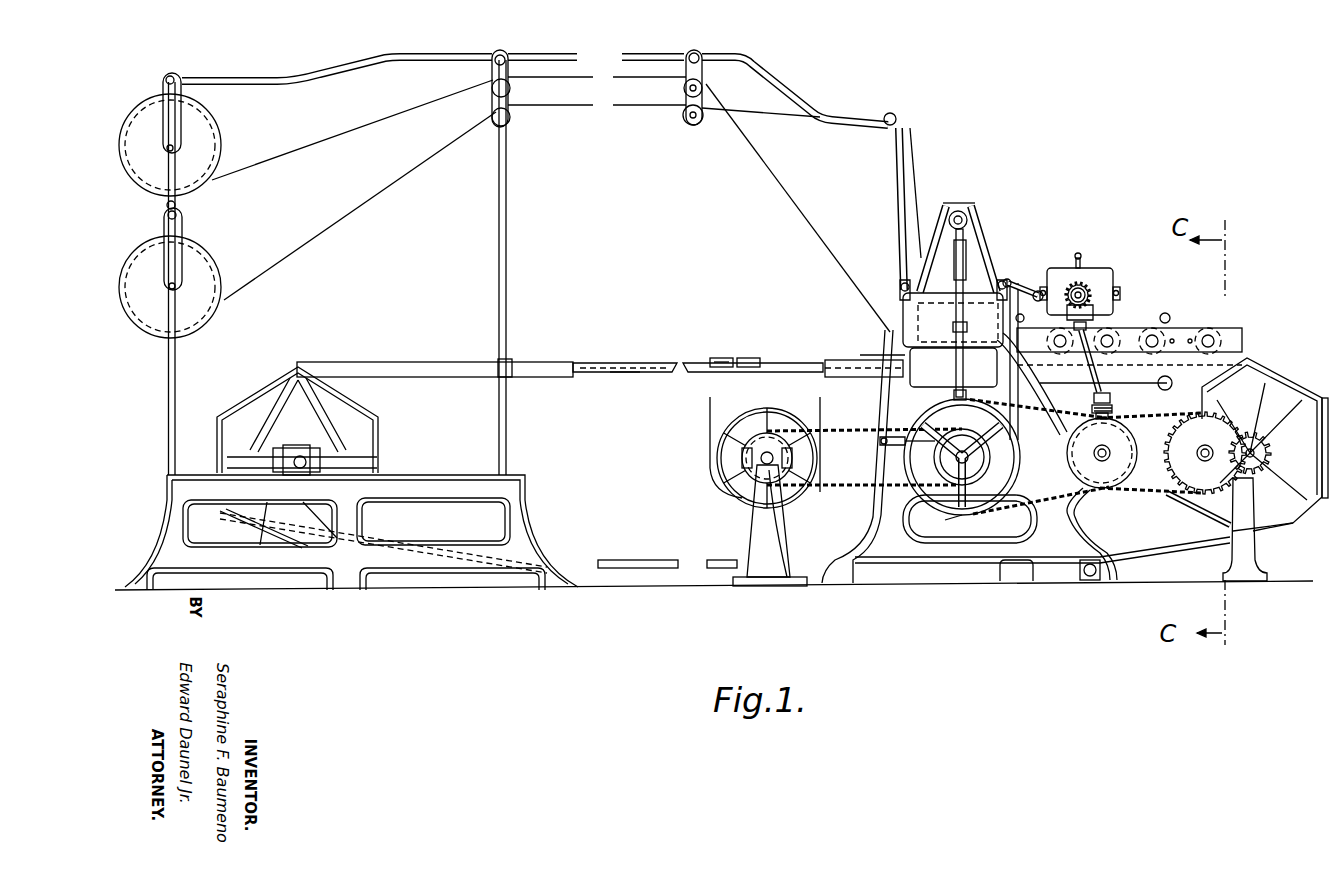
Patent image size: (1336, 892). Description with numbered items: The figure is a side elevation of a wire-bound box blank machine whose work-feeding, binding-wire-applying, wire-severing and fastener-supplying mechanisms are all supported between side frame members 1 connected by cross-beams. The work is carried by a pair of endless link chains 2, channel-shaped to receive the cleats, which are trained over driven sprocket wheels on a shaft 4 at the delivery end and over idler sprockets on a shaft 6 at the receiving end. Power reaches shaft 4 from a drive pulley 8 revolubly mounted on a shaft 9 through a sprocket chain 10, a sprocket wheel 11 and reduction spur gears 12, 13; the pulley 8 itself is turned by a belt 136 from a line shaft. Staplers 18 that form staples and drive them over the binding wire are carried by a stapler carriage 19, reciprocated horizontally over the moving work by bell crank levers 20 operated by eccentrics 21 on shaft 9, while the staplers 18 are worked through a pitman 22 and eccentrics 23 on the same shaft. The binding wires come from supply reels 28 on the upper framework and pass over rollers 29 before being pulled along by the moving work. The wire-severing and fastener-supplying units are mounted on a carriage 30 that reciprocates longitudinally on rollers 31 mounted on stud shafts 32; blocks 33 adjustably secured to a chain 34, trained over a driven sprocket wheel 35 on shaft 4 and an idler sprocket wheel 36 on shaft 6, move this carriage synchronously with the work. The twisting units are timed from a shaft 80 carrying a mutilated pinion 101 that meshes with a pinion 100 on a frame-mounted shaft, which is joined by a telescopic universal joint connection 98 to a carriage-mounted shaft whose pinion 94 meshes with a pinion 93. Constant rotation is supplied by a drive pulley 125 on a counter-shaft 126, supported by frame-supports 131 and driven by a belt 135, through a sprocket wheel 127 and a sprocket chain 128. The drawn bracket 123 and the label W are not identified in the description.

The side frame members 1 is at (528, 548).
The endless link chains 2 is at (660, 362).
The shaft 4 is at (1262, 445).
The shaft 6 is at (300, 455).
The drive pulley 8 is at (905, 520).
The shaft 9 is at (955, 459).
The sprocket chain 10 is at (1142, 490).
The sprocket wheel 11 is at (1205, 453).
The reduction spur gear 12 is at (1289, 528).
The reduction spur gear 13 is at (1262, 444).
The staplers 18 is at (968, 258).
The stapler carriage 19 is at (930, 184).
The bell crank levers 20 is at (1048, 410).
The eccentrics 21 is at (1085, 392).
The pitman 22 is at (885, 335).
The eccentrics 23 is at (945, 428).
The supply reels 28 is at (195, 270).
The rollers 29 is at (490, 127).
The carriage 30 is at (1060, 249).
The rollers 31 is at (1225, 333).
The stud shafts 32 is at (1208, 334).
The blocks 33 is at (722, 358).
The chain 34 is at (630, 372).
The driven sprocket wheel 35 is at (1262, 375).
The idler sprocket wheel 36 is at (377, 448).
The shaft 80 is at (1100, 450).
The pinion 93 is at (1088, 288).
The pinion 94 is at (1057, 292).
The telescopic universal joint connection 98 is at (1090, 385).
The pinion 100 is at (1108, 420).
The mutilated pinion 101 is at (1090, 492).
The bracket 123 is at (752, 358).
The drive pulley 125 is at (790, 420).
The counter-shaft 126 is at (787, 518).
The sprocket wheel 127 is at (795, 452).
The sprocket chain 128 is at (842, 430).
The frame-supports 131 is at (763, 523).
The drive belt 135 is at (708, 422).
The belt 136 is at (950, 518).
The wire W is at (361, 207).